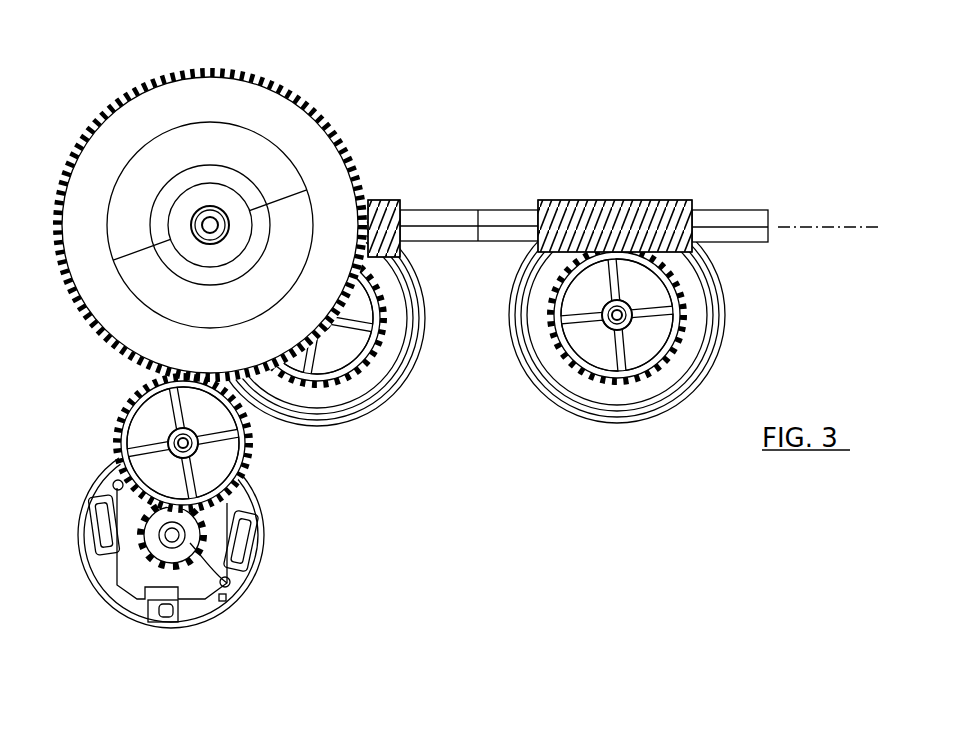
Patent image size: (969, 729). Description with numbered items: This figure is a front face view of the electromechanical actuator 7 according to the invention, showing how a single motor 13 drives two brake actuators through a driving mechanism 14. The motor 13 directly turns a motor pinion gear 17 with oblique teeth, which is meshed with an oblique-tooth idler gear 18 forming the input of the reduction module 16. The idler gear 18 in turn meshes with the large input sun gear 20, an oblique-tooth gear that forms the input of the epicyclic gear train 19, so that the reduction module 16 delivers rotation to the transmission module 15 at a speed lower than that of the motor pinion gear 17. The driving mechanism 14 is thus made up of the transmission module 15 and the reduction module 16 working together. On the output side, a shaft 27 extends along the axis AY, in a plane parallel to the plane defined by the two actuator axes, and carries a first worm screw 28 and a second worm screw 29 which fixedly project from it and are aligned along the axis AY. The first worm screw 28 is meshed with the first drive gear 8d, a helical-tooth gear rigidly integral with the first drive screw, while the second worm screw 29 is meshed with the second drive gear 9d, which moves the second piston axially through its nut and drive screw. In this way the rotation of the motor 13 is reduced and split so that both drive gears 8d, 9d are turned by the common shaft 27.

The electromechanical actuator 7 is at (705, 90).
The first drive gear 8d is at (378, 392).
The second drive gear 9d is at (628, 405).
The motor 13 is at (110, 567).
The driving mechanism 14 is at (557, 563).
The transmission module 15 is at (507, 423).
The reduction module 16 is at (362, 472).
The motor pinion gear 17 is at (212, 572).
The idler gear 18 is at (257, 463).
The epicyclic gear train 19 is at (112, 82).
The input sun gear 20 is at (237, 93).
The shaft 27 is at (727, 220).
The first worm screw 28 is at (385, 200).
The second worm screw 29 is at (605, 205).
The axis AY is at (848, 232).